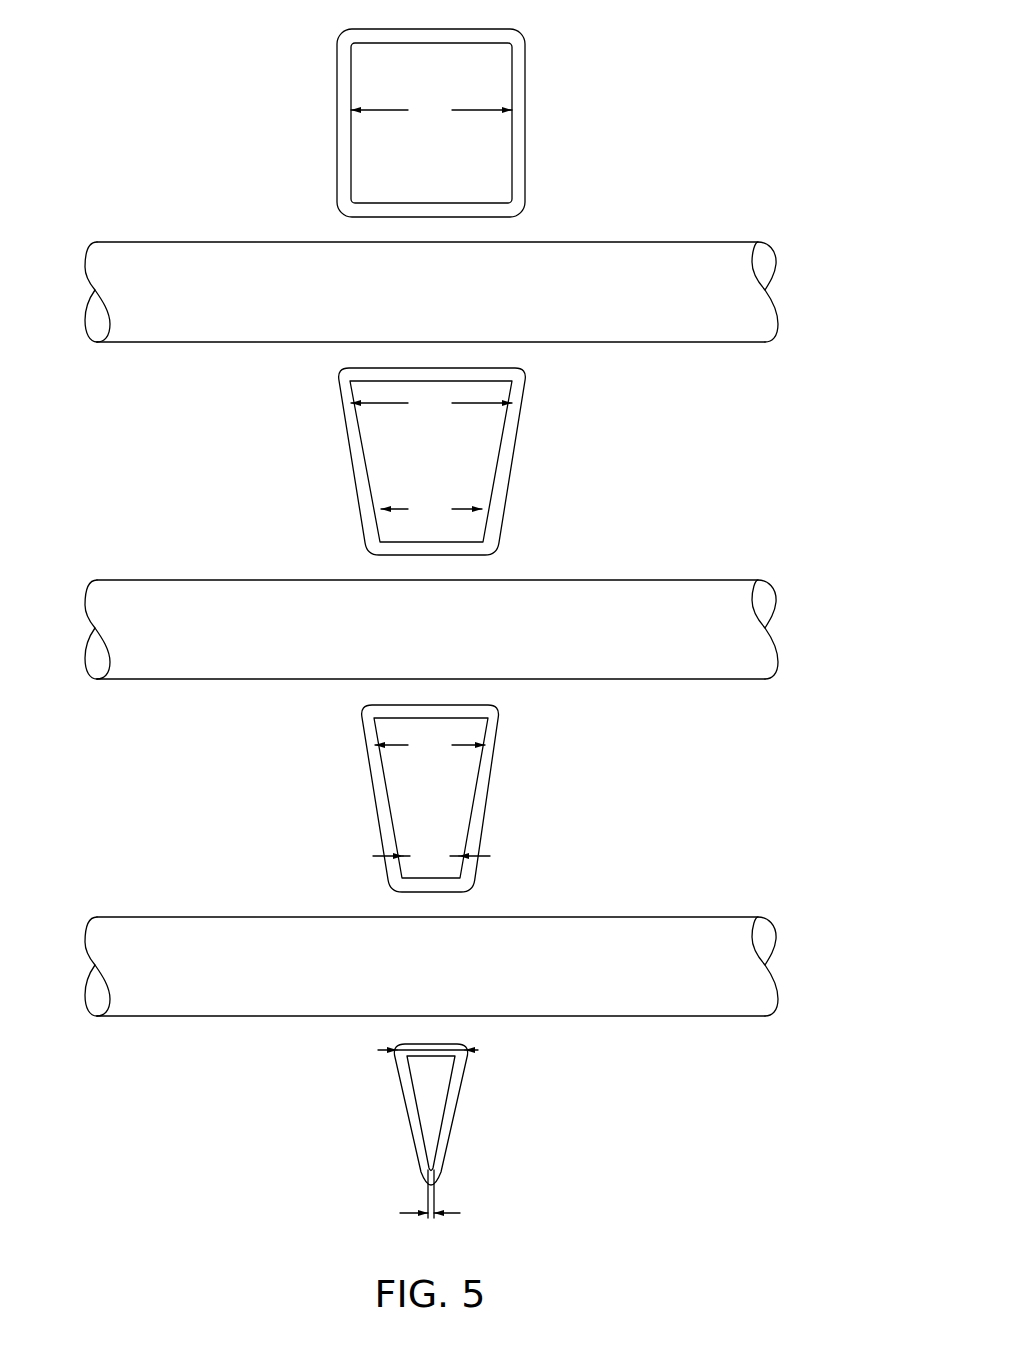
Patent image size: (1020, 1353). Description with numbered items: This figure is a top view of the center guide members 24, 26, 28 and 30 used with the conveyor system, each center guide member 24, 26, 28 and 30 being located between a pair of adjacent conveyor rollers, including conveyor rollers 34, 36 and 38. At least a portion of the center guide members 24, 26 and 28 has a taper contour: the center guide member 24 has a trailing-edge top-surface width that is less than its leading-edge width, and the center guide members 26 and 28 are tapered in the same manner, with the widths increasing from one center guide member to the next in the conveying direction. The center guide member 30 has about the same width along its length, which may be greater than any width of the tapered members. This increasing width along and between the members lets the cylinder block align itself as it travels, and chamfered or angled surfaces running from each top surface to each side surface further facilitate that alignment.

The center guide member 24 is at (433, 1136).
The center guide member 26 is at (432, 798).
The center guide member 28 is at (428, 461).
The center guide member 30 is at (431, 108).
The conveyor roller 34 is at (709, 925).
The conveyor roller 36 is at (708, 586).
The conveyor roller 38 is at (708, 250).